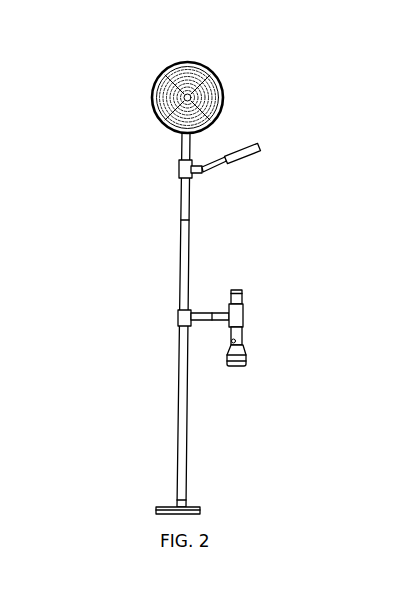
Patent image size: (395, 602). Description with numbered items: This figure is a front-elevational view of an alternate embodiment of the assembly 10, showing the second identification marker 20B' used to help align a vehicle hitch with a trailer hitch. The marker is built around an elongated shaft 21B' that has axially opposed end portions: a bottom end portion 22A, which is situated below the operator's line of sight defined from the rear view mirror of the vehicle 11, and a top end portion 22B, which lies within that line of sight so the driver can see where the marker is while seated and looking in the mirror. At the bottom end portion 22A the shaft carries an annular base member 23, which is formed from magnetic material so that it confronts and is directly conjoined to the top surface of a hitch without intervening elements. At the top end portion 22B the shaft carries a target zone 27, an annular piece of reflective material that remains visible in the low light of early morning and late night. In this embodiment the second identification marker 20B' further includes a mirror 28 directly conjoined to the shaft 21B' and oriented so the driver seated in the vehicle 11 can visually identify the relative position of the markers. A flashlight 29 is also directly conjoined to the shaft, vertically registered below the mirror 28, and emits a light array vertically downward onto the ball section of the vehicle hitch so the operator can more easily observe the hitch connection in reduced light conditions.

The assembly 10 is at (304, 60).
The second identification marker 20B' is at (176, 273).
The shaft 21B' is at (225, 320).
The bottom end portion 22A is at (177, 507).
The top end portion 22B is at (192, 135).
The annular base member 23 is at (198, 507).
The target zone 27 is at (210, 97).
The mirror 28 is at (260, 146).
The flashlight 29 is at (245, 342).
The vehicle 11 is at (253, 395).